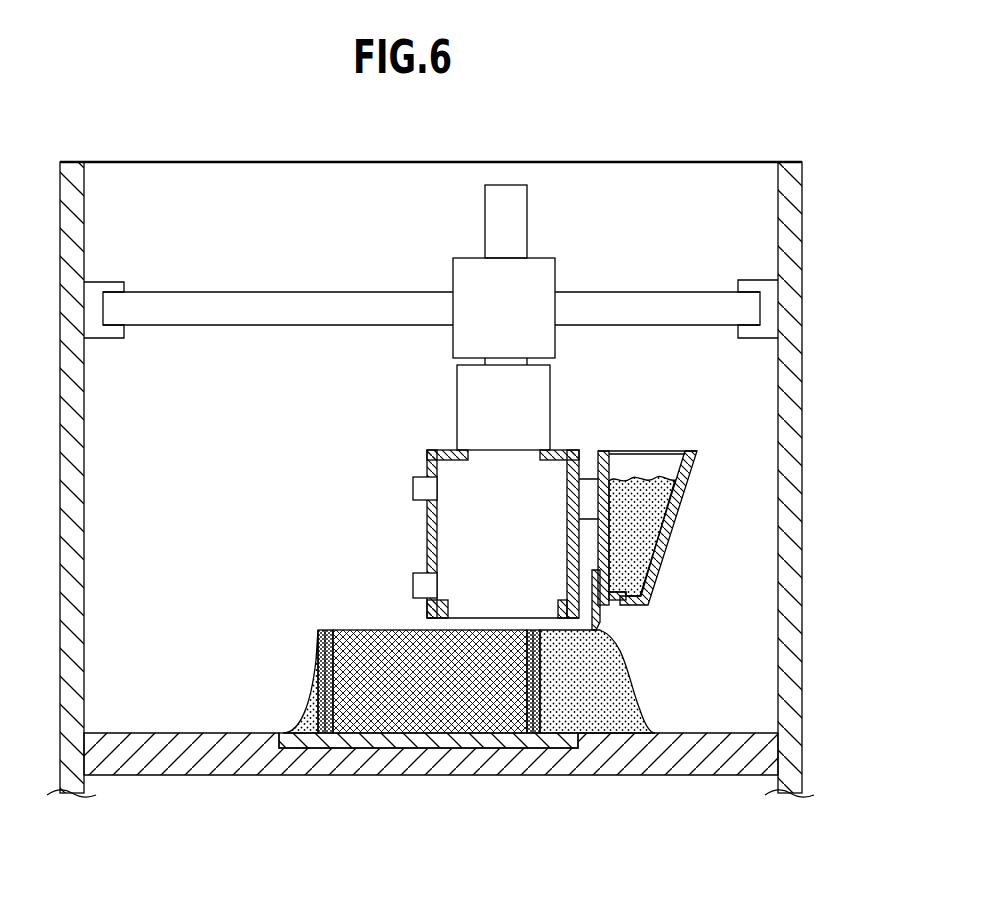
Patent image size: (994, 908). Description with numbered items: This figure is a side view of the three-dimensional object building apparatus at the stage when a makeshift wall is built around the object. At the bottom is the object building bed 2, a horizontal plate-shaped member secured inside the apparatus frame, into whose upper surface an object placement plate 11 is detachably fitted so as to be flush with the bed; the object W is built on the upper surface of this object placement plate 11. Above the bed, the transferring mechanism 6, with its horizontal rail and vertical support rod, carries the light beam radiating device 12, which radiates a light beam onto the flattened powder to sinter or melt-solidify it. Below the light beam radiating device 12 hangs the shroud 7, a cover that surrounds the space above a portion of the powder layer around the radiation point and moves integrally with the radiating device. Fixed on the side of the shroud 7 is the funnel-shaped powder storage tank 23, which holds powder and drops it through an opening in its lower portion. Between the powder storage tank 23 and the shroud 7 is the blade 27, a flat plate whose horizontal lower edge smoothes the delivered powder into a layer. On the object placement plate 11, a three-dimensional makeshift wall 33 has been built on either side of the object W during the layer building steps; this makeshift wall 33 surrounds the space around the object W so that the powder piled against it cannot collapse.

The object building bed 2 is at (697, 765).
The transferring mechanism 6 is at (566, 256).
The light beam radiating device 12 is at (535, 400).
The shroud 7 is at (555, 450).
The powder storage tank 23 is at (697, 466).
The blade 27 is at (600, 615).
The object W is at (423, 718).
The makeshift wall 33 is at (322, 735).
The object placement plate 11 is at (470, 742).